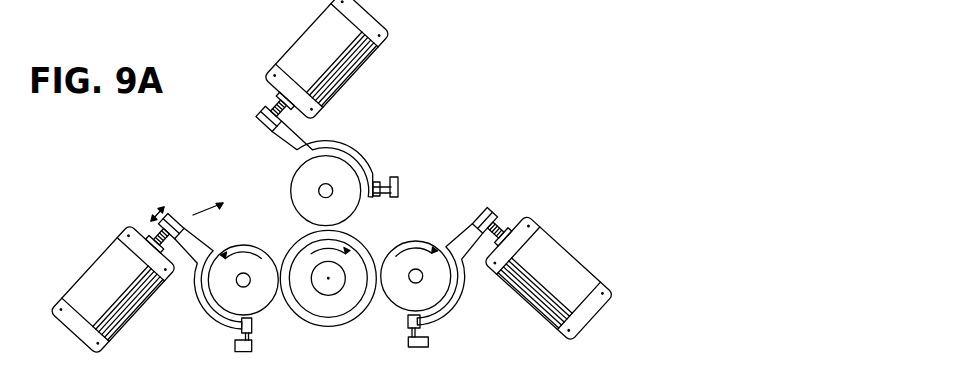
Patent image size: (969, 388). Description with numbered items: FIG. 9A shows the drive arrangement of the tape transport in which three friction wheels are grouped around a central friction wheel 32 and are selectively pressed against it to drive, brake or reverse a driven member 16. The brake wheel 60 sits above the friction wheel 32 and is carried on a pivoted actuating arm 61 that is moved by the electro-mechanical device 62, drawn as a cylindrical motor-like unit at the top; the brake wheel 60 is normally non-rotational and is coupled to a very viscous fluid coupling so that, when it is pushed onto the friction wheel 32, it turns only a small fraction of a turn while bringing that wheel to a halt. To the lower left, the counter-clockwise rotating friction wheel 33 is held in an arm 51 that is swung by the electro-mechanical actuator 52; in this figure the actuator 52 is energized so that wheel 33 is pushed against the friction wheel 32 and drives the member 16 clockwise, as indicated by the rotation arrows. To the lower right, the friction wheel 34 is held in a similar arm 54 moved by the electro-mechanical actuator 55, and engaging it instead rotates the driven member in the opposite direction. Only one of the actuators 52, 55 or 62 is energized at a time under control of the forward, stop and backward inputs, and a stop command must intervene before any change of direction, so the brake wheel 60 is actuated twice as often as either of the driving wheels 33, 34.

The electro-mechanical device 62 is at (318, 36).
The actuating arm 61 is at (293, 150).
The brake wheel 60 is at (299, 190).
The driven member 16 is at (342, 250).
The actuating arm 51 is at (203, 243).
The electro-mechanical actuator 52 is at (100, 258).
The friction wheel 33 is at (222, 297).
The friction wheel 32 is at (323, 326).
The friction wheel 34 is at (402, 242).
The actuating arm 54 is at (455, 240).
The electro-mechanical actuator 55 is at (562, 252).